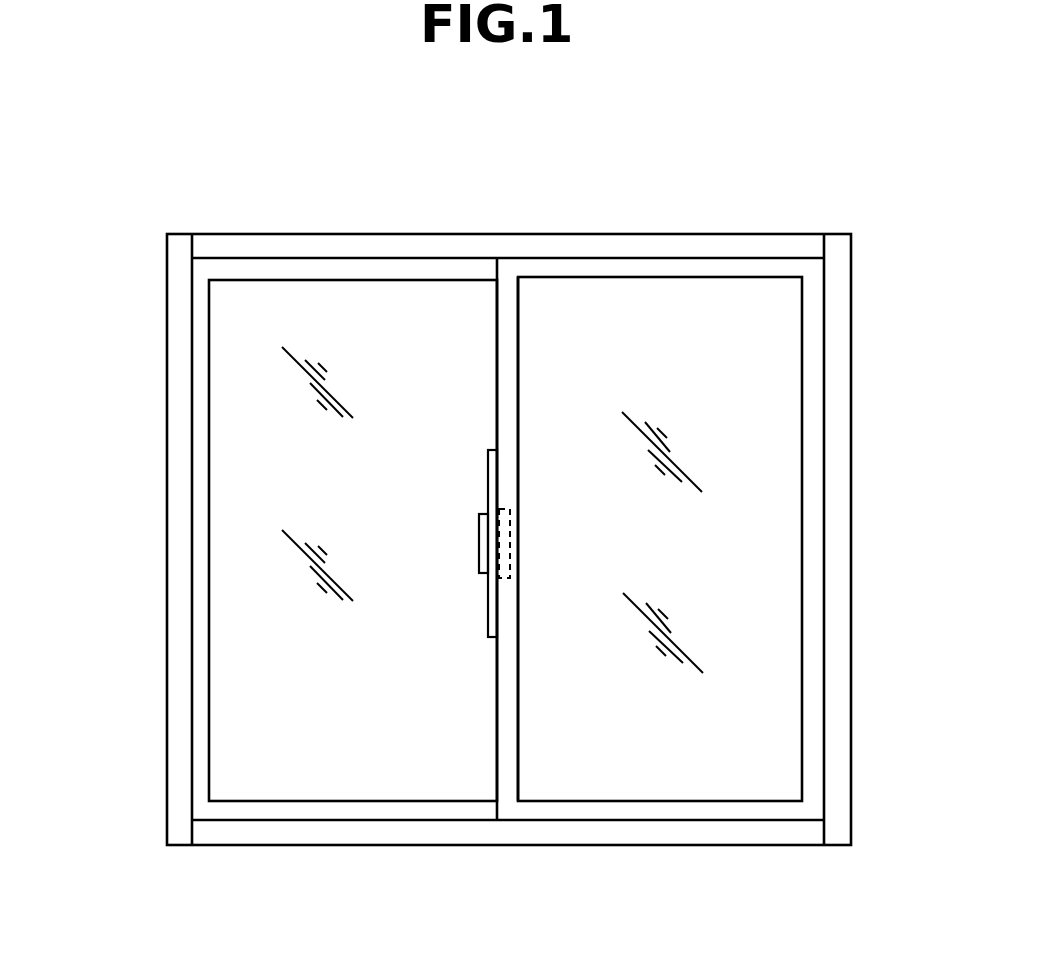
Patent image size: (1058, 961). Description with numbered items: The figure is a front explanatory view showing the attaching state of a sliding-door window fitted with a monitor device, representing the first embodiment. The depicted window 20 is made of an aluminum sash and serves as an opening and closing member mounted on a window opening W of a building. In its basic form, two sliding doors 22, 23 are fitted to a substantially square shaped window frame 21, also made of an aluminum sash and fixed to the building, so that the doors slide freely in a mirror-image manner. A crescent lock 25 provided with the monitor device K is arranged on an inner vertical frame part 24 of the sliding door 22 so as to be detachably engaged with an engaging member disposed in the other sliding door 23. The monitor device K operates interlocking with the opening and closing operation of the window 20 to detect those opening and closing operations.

The window 20 is at (758, 507).
The window frame 21 is at (688, 262).
The sliding door 22 is at (763, 378).
The sliding door 23 is at (228, 382).
The inner vertical frame part 24 is at (513, 695).
The crescent lock 25 is at (462, 524).
The window opening W is at (385, 282).
The monitor device K is at (480, 560).